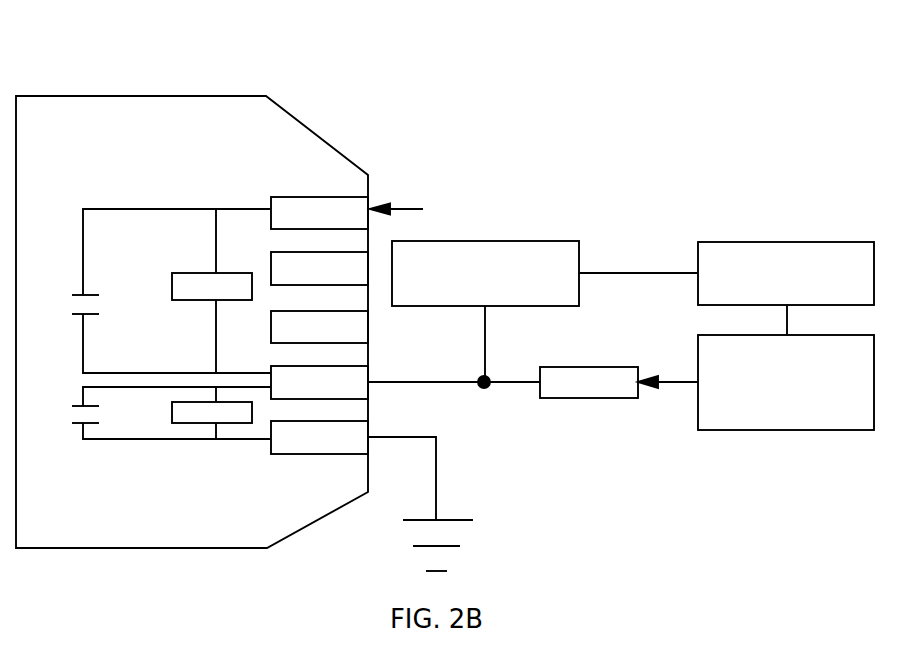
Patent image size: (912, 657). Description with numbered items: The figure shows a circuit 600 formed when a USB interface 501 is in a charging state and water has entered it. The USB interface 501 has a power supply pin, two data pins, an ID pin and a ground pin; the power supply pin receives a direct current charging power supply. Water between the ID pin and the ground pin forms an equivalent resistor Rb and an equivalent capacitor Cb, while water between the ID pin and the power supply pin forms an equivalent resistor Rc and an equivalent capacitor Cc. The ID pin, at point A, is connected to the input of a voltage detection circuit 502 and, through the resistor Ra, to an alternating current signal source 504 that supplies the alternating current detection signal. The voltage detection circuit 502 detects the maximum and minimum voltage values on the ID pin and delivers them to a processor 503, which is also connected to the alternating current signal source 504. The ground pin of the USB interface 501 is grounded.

The circuit 600 is at (447, 36).
The USB interface 501 is at (320, 137).
The voltage detection circuit 502 is at (485, 273).
The processor 503 is at (786, 273).
The alternating current signal source 504 is at (786, 382).